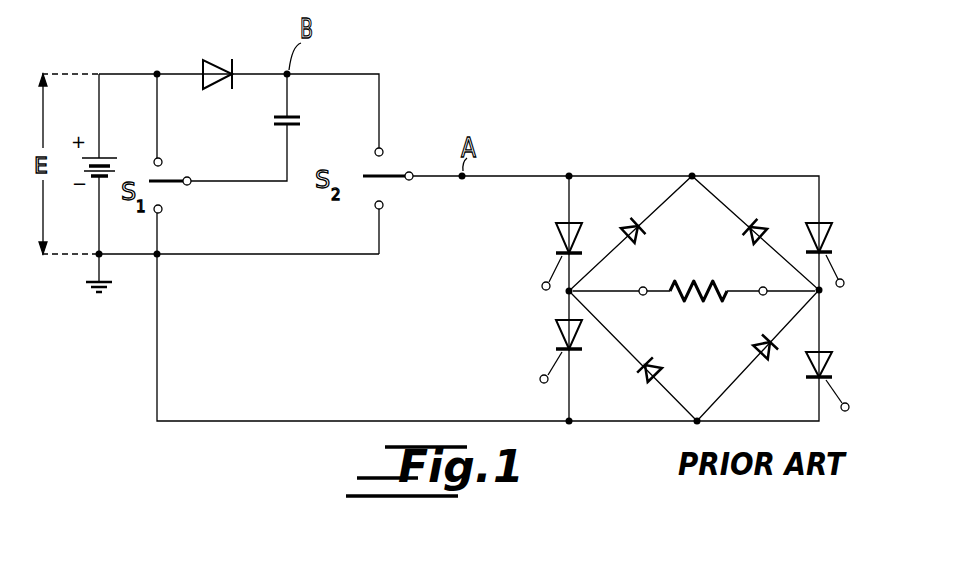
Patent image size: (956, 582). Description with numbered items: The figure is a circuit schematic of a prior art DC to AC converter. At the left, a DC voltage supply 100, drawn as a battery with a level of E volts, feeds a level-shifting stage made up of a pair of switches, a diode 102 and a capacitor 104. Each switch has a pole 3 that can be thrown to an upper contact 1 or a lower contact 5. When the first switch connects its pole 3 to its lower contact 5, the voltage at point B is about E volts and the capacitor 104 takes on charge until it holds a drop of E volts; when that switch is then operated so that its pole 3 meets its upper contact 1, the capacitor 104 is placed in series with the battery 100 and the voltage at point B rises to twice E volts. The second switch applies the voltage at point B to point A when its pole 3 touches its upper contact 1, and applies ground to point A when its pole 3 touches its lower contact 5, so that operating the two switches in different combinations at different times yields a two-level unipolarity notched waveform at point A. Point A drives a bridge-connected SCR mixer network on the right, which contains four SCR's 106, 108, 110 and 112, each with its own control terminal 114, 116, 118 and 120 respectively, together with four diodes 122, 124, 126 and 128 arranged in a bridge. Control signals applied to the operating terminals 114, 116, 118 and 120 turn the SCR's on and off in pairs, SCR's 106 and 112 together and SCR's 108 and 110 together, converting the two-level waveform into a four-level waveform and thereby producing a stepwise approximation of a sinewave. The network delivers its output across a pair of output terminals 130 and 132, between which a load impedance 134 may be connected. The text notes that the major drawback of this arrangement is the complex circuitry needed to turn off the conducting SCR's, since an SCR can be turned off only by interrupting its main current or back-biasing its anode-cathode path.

The DC voltage supply 100 is at (111, 156).
The diode 102 is at (229, 66).
The capacitor 104 is at (301, 118).
The SCR 106 is at (558, 223).
The SCR 108 is at (557, 331).
The SCR 110 is at (835, 225).
The SCR 112 is at (837, 358).
The control terminal 114 is at (541, 286).
The control terminal 116 is at (540, 382).
The control terminal 118 is at (845, 285).
The control terminal 120 is at (850, 406).
The diode 122 is at (636, 213).
The diode 124 is at (638, 378).
The diode 126 is at (755, 219).
The diode 128 is at (774, 358).
The output terminal 130 is at (643, 296).
The output terminal 132 is at (762, 296).
The load impedance 134 is at (697, 279).
The upper contact 1 is at (165, 159).
The pole 3 is at (190, 186).
The lower contact 5 is at (163, 211).